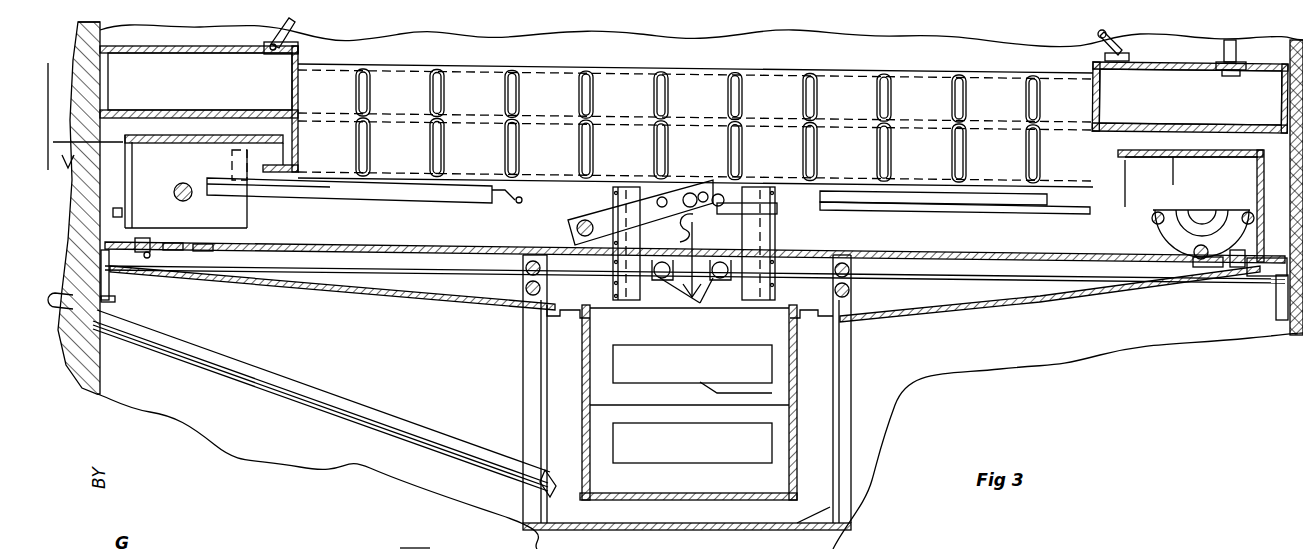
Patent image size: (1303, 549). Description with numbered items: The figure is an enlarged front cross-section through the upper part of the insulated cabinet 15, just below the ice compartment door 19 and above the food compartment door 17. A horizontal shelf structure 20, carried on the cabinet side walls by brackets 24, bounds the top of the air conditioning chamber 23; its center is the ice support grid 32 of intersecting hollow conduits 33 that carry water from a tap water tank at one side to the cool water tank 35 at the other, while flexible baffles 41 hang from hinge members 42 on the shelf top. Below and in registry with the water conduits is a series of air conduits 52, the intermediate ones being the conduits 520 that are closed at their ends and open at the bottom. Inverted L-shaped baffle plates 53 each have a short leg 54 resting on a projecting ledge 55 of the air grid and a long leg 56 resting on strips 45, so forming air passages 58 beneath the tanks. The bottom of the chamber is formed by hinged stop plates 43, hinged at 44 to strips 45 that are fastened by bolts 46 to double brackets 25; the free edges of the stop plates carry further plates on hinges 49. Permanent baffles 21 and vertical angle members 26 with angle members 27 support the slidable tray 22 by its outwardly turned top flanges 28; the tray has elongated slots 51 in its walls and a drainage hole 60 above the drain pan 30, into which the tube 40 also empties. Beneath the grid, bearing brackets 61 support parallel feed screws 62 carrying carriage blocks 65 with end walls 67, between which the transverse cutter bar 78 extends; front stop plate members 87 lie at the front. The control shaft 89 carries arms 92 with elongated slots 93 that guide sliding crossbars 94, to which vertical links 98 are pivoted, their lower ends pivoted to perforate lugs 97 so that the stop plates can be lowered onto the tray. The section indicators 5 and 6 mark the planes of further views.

The section line 5- 5 is at (974, 257).
The section line 6- 6 is at (87, 142).
The cabinet 15 is at (86, 385).
The door 17 is at (1040, 353).
The door 19 is at (975, 53).
The horizontal shelf structure 20 is at (1150, 61).
The permanent baffles 21 is at (407, 296).
The slidable tray 22 is at (800, 363).
The air conditioning and refrigerating chamber 23 is at (890, 230).
The brackets 24 is at (167, 117).
The double brackets 25 is at (110, 288).
The vertical angle members 26 is at (525, 380).
The angle members 27 is at (547, 330).
The top flanges 28 is at (552, 309).
The drain pan 30 is at (800, 523).
The ice support grid 32 is at (830, 70).
The hollow conduits 33 is at (827, 88).
The cool water tank 35 is at (123, 72).
The tube 40 is at (220, 374).
The baffles 41 is at (303, 36).
The hinge members 42 is at (264, 44).
The stop plates 43 is at (323, 283).
The hinges 44 is at (187, 252).
The strips 45 is at (1220, 262).
The bolts 46 is at (150, 253).
The hinges 49 is at (645, 280).
The elongated slots 51 is at (720, 463).
The air conduits 52 is at (430, 145).
The air conduits 520 is at (658, 158).
The inverted L-shaped baffle plates 53 is at (173, 143).
The short leg 54 is at (270, 152).
The projecting ledge 55 is at (277, 175).
The long leg 56 is at (180, 198).
The air passages 58 is at (230, 125).
The drainage hole 60 is at (690, 496).
The bearing brackets 61 is at (1163, 237).
The feed screws 62 is at (176, 216).
The carriage block 65 is at (248, 228).
The end wall 67 is at (791, 214).
The cutter bar 78 is at (373, 192).
The front stop plate members 87 is at (415, 545).
The shaft 89 is at (576, 228).
The arms 92 is at (604, 217).
The elongated slot 93 is at (695, 227).
The sliding crossbar 94 is at (745, 205).
The perforate lugs 97 is at (686, 306).
The vertical links 98 is at (613, 253).